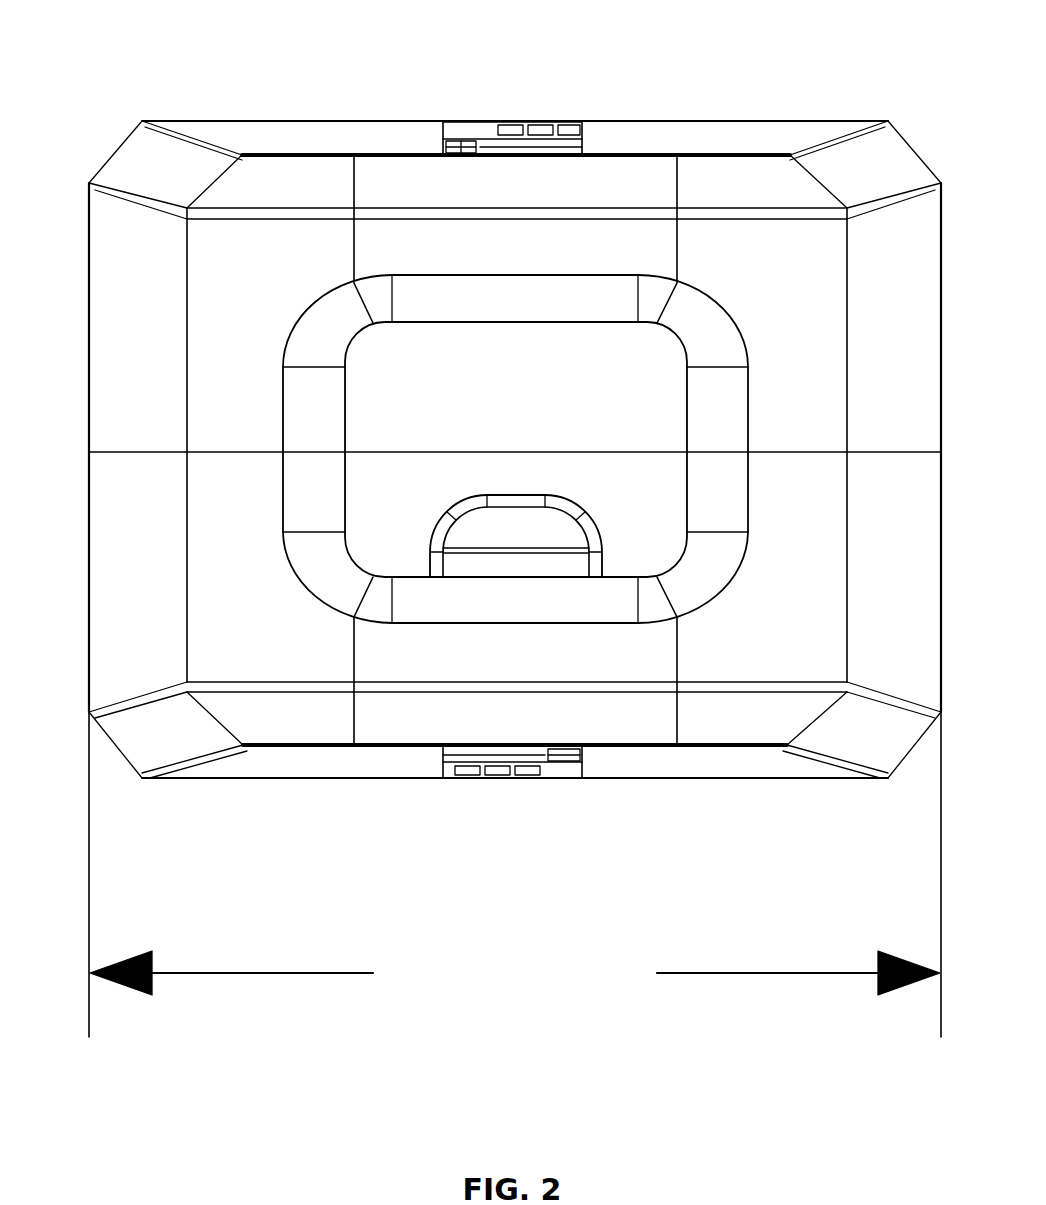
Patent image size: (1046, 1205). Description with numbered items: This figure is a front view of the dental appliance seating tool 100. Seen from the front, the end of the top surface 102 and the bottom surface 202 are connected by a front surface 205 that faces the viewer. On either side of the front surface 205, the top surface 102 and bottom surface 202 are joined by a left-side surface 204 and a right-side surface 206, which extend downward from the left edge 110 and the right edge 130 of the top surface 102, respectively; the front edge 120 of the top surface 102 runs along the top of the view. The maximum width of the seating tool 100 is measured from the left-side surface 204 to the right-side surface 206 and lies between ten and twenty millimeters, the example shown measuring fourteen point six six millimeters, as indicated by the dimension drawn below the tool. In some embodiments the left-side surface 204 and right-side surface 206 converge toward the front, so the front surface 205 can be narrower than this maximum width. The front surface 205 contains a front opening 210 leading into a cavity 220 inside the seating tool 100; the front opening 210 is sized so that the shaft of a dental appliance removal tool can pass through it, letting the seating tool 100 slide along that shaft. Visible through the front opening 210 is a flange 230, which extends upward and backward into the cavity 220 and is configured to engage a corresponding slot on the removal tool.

The dental appliance seating tool 100 is at (149, 92).
The top surface 102 is at (715, 140).
The left edge 110 is at (108, 192).
The front edge 120 is at (402, 207).
The right edge 130 is at (898, 190).
The bottom surface 202 is at (368, 767).
The left-side surface 204 is at (135, 598).
The front surface 205 is at (290, 267).
The right-side surface 206 is at (880, 292).
The front opening 210 is at (345, 423).
The cavity 220 is at (388, 463).
The flange 230 is at (555, 522).